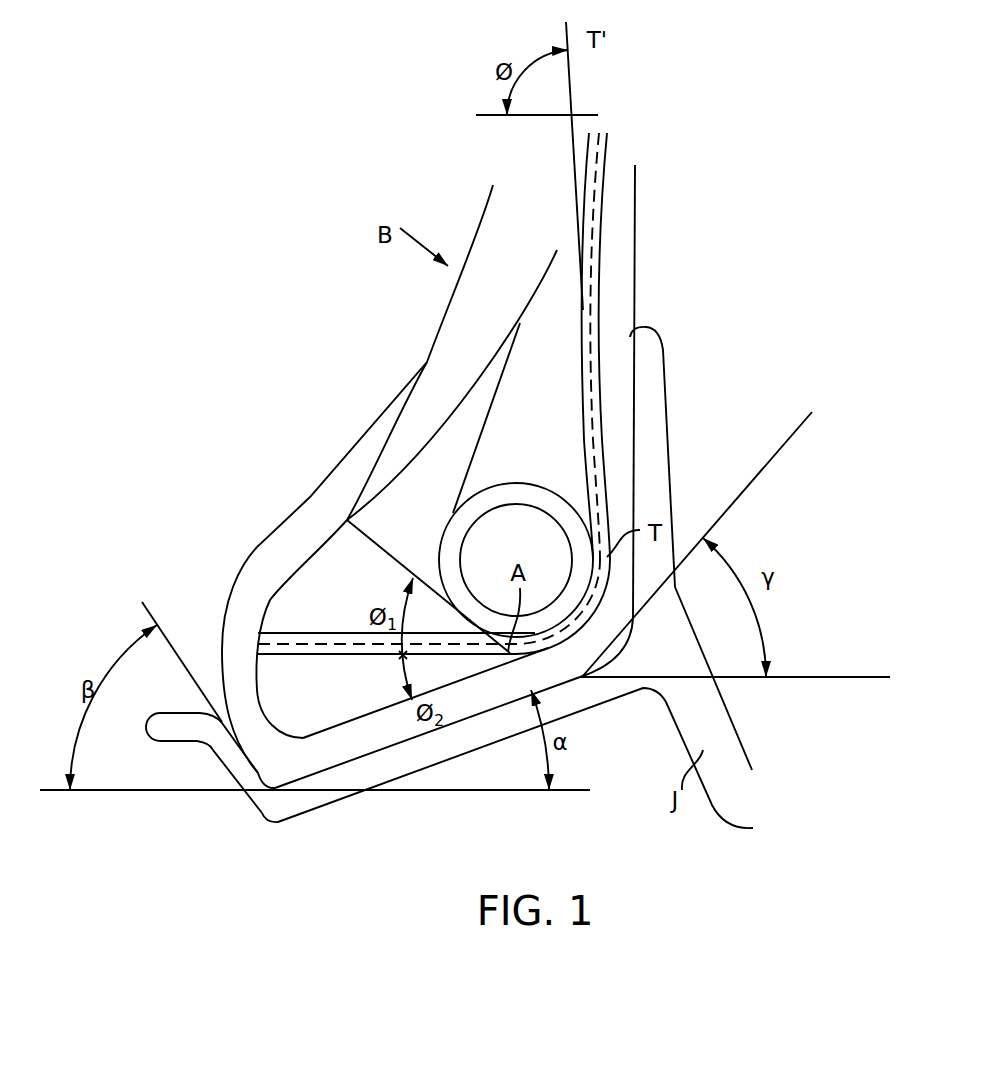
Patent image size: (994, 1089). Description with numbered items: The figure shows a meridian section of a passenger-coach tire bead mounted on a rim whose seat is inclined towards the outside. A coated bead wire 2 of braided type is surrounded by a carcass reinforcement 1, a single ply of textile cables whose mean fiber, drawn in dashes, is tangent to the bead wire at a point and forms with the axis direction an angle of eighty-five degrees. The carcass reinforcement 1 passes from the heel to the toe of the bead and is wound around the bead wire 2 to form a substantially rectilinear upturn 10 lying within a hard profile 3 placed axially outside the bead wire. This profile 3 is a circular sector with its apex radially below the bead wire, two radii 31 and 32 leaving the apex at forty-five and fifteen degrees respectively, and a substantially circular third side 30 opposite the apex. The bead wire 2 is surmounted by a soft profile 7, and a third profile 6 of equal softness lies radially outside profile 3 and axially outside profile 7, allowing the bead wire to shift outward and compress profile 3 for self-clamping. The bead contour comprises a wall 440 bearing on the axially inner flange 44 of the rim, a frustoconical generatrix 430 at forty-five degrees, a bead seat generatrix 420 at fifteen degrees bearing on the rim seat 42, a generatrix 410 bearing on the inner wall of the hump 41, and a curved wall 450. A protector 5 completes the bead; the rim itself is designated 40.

The carcass reinforcement 1 is at (597, 212).
The coated bead wire 2 is at (527, 527).
The profile 3 is at (396, 612).
The protector 5 is at (320, 510).
The third profile 6 is at (452, 385).
The profile 7 is at (553, 323).
The upturn 10 is at (315, 645).
The third side 30 is at (263, 613).
The radially outer side or radius 31 is at (372, 540).
The radially inner side or radius 32 is at (388, 703).
The rim 40 is at (743, 787).
The protrusion or hump 41 is at (227, 757).
The rim seat 42 is at (450, 760).
The axially inner flange 44 is at (648, 382).
The frustoconical generatrix 410 is at (260, 813).
The second frustoconical generatrix 420 is at (363, 760).
The frustoconical generatrix 430 is at (618, 637).
The wall 440 is at (632, 443).
The wall 450 is at (257, 547).